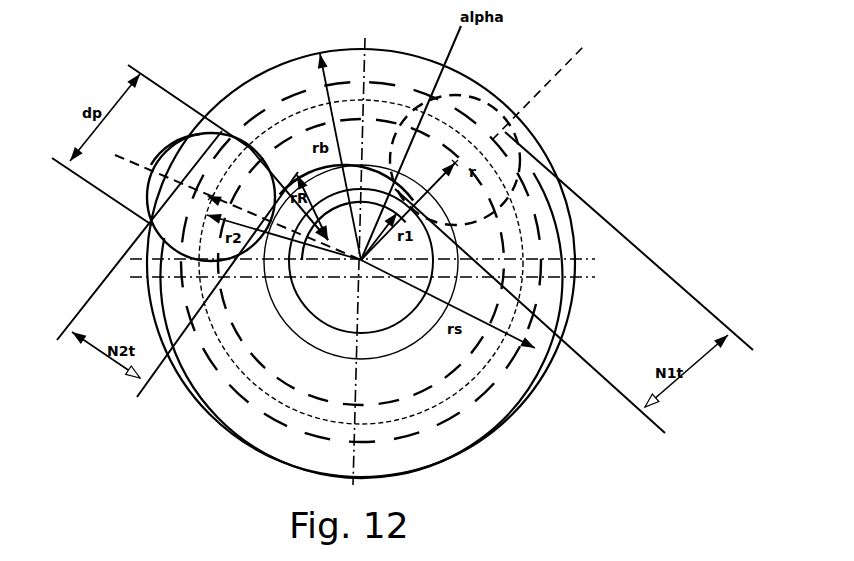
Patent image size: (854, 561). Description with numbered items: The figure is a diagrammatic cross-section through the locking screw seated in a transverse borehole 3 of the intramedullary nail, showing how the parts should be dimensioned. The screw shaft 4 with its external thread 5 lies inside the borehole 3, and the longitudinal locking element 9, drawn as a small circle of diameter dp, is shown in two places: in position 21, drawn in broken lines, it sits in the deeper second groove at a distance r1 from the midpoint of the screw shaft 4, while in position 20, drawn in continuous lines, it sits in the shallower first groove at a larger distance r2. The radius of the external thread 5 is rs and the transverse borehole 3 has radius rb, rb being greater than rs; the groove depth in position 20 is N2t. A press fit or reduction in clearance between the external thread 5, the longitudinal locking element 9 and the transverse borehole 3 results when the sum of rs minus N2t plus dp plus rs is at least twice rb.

The transverse borehole 3 is at (476, 76).
The screw shaft 4 is at (480, 380).
The external thread 5 is at (547, 202).
The longitudinal locking element 9 is at (214, 172).
The position 20 is at (171, 145).
The position 21 is at (487, 103).